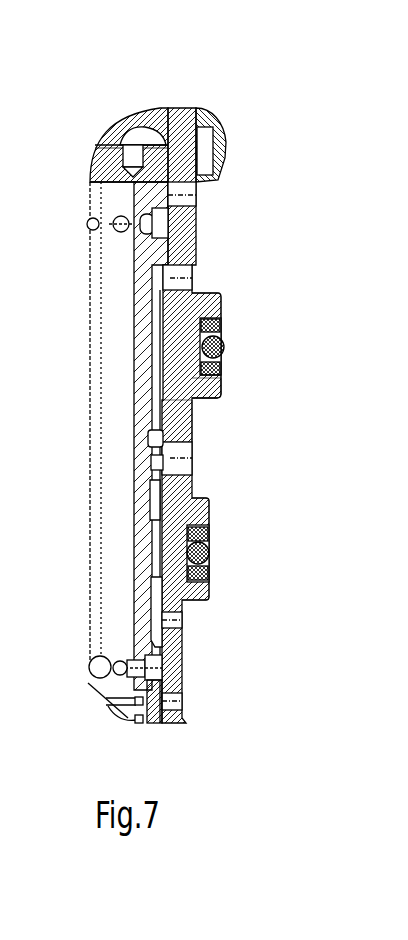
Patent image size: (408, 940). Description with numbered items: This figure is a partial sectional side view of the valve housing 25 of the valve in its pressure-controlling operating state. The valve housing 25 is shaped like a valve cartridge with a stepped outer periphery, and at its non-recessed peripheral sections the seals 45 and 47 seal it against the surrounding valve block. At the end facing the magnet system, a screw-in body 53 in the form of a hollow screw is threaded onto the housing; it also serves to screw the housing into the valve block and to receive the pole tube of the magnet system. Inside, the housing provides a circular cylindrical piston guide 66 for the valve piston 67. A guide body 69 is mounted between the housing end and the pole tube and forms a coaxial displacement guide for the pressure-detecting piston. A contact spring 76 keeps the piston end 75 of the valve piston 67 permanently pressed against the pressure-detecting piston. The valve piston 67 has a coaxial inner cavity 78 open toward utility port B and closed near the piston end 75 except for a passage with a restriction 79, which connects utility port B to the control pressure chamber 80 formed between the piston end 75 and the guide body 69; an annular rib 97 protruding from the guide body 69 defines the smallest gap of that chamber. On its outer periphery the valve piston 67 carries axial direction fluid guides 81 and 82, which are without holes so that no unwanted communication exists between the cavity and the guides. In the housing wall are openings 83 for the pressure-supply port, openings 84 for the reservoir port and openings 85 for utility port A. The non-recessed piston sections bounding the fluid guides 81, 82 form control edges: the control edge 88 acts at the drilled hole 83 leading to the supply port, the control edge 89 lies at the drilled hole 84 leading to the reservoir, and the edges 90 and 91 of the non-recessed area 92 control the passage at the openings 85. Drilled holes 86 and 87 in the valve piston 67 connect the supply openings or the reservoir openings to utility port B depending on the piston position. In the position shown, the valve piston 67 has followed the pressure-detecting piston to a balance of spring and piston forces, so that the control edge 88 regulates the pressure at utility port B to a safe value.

The valve housing 25 is at (187, 432).
The seal 45 is at (211, 553).
The seal 47 is at (224, 347).
The screw-in body 53 is at (214, 137).
The piston guide 66 is at (208, 507).
The valve piston 67 is at (220, 300).
The guide body 69 is at (148, 110).
The piston end 75 is at (108, 160).
The contact spring 76 is at (136, 720).
The inner cavity 78 is at (127, 331).
The restriction 79 is at (106, 190).
The control pressure chamber 80 is at (145, 137).
The fluid guide 81 is at (155, 580).
The fluid guide 82 is at (194, 400).
The openings 83 is at (183, 624).
The openings 84 is at (196, 188).
The openings 85 is at (190, 466).
The drilled holes 86 is at (135, 673).
The drilled holes 87 is at (144, 216).
The control edge 88 is at (183, 666).
The control edge 89 is at (200, 223).
The edge 90 is at (153, 484).
The edge 91 is at (153, 438).
The non-recessed area 92 is at (156, 459).
The annular rib 97 is at (100, 144).